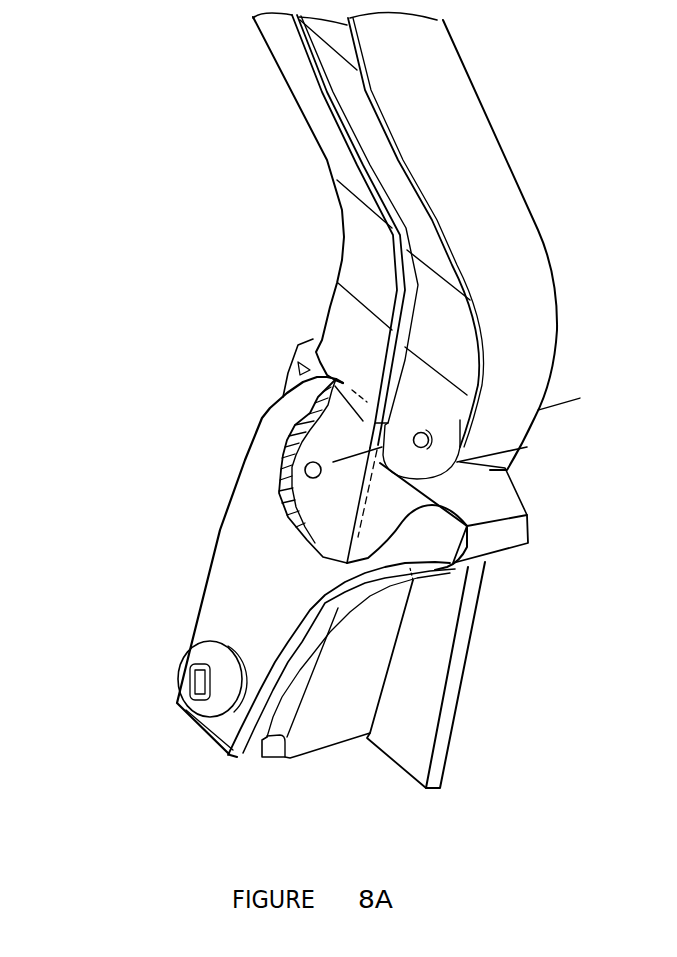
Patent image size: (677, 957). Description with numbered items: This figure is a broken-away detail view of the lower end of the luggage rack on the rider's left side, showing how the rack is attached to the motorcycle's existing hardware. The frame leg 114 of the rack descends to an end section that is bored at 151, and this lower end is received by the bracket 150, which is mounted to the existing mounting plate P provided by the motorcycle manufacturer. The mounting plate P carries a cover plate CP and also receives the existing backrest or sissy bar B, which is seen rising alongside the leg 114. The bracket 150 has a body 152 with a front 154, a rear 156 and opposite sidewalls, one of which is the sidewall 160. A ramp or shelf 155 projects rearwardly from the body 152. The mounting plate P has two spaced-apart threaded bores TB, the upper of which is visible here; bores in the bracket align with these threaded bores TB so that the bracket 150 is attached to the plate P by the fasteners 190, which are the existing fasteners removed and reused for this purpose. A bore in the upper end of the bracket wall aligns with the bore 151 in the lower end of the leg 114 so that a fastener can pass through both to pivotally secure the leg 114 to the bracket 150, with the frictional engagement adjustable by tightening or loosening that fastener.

The frame leg 114 is at (505, 183).
The bore 151 is at (400, 443).
The ramp or shelf 155 is at (483, 503).
The bracket 150 is at (252, 580).
The front 154 is at (222, 527).
The body 152 is at (248, 560).
The sidewall 160 is at (257, 603).
The rear 156 is at (277, 688).
The fastener 190 is at (183, 653).
The backrest (sissy bar) B is at (335, 180).
The threaded bore TB is at (293, 468).
The cover plate CP is at (462, 640).
The mounting plate P is at (420, 730).